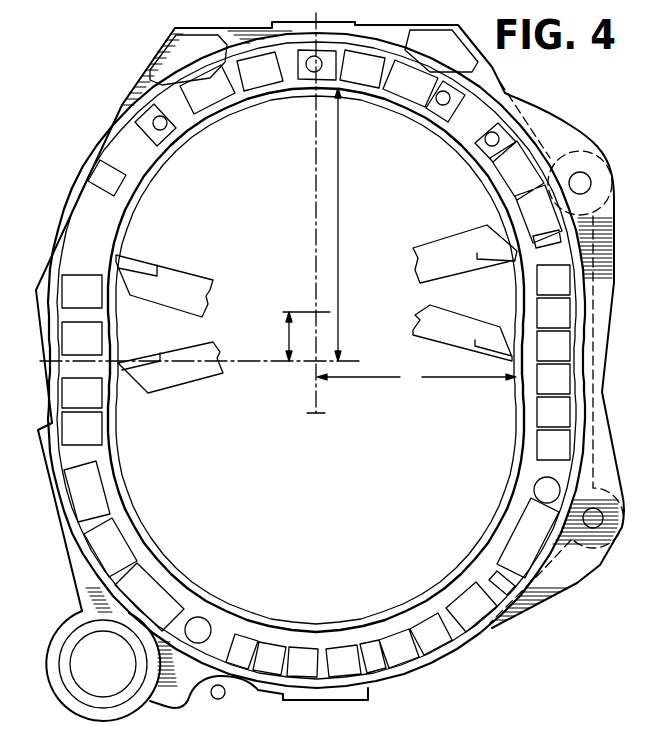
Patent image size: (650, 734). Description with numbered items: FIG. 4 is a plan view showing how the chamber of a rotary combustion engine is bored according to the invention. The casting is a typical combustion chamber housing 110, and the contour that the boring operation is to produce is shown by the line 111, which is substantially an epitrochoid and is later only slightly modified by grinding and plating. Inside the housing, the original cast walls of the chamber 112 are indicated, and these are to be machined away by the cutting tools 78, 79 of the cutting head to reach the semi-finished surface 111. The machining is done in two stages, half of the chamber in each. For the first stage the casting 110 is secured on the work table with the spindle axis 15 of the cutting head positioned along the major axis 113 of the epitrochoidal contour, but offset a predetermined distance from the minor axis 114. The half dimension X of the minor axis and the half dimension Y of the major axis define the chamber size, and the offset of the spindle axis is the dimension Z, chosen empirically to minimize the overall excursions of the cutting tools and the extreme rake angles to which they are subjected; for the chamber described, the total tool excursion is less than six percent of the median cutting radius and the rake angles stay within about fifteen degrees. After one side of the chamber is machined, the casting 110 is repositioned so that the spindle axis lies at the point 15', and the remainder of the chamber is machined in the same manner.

The combustion chamber housing 110 is at (560, 122).
The contour line of the chamber 111 is at (120, 455).
The original cast walls of the chamber 112 is at (187, 598).
The major axis of the epitrochoidal contour 113 is at (313, 118).
The minor axis 114 is at (233, 366).
The cutting tool 78 is at (173, 278).
The cutting tool 79 is at (460, 323).
The spindle axis 15 is at (306, 295).
The spindle axis point for second stage 15' is at (339, 430).
The half dimension of the minor axis X is at (416, 376).
The half dimension of the major axis Y is at (341, 208).
The offset dimension of the spindle axis Z is at (288, 330).